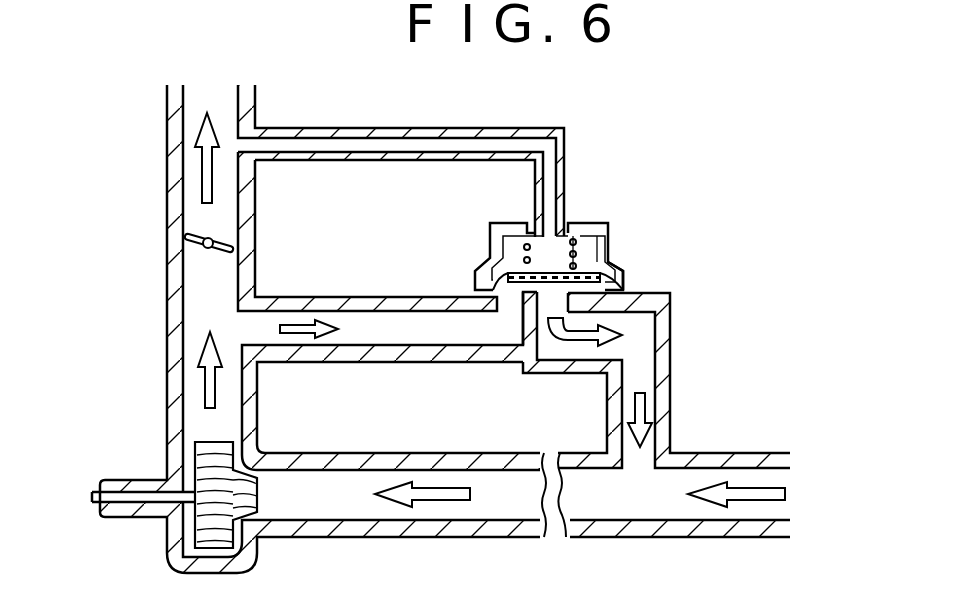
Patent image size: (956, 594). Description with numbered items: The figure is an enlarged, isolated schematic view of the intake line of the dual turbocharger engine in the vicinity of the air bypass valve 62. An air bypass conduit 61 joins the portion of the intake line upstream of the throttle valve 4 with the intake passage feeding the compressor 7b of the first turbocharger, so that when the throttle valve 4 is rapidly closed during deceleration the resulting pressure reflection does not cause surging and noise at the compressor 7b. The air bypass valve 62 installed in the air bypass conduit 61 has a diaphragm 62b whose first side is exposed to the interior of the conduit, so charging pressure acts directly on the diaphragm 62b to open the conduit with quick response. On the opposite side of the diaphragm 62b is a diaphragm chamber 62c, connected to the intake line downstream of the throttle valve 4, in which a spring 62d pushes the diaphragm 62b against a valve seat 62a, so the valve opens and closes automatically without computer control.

The throttle valve 4 is at (231, 242).
The air bypass conduit 61 is at (394, 332).
The air bypass valve 62 is at (593, 216).
The valve seat 62a is at (582, 283).
The diaphragm 62b is at (612, 263).
The diaphragm chamber 62c is at (597, 243).
The spring 62d is at (522, 247).
The compressor 7b is at (225, 513).